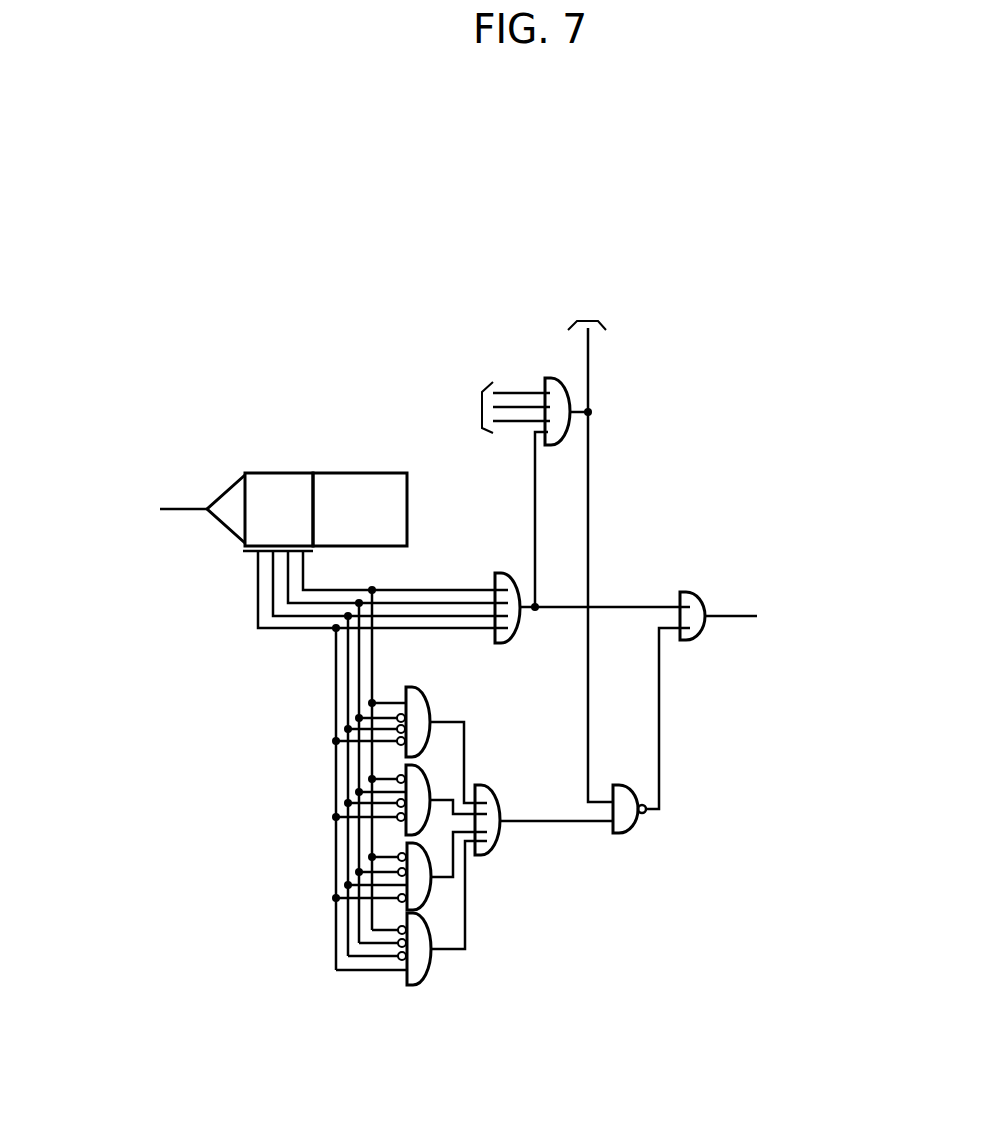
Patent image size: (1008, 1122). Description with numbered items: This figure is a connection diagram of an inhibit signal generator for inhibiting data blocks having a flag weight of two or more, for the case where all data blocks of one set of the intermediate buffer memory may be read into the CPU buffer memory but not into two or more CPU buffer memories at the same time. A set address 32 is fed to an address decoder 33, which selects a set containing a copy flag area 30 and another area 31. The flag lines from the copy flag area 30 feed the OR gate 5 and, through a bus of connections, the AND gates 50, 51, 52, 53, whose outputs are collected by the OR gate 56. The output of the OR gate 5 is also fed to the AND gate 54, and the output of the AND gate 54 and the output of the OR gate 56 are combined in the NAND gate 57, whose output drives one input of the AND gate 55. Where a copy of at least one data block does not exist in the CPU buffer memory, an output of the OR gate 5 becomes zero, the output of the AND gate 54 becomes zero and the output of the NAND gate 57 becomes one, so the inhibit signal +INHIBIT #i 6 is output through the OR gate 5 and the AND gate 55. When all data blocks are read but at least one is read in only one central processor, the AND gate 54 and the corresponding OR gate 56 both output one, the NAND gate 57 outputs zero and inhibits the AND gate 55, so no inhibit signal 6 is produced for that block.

The OR gate 5 is at (513, 641).
The inhibit signal +INHIBIT #i 6 is at (737, 618).
The copy flag area 30 is at (283, 473).
The another area 31 is at (350, 473).
The set address 32 is at (182, 507).
The address decoder 33 is at (231, 488).
The AND gate 50 is at (425, 694).
The AND gate 51 is at (428, 772).
The AND gate 52 is at (428, 883).
The AND gate 53 is at (427, 985).
The AND gate 54 is at (558, 378).
The AND gate 55 is at (697, 595).
The OR gate 56 is at (498, 838).
The NAND gate 57 is at (645, 840).